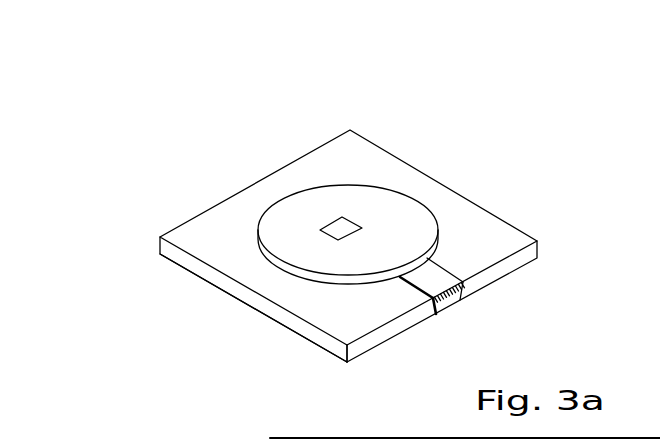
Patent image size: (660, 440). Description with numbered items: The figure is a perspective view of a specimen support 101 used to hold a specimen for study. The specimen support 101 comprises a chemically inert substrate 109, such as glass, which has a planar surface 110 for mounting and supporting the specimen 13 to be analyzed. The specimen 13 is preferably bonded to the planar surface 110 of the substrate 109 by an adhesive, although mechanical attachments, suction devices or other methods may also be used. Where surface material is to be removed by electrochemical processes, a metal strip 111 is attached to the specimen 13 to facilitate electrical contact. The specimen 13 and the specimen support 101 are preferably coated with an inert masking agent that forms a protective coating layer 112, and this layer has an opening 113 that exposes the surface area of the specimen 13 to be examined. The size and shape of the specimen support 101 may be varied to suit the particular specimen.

The specimen support 101 is at (501, 66).
The specimen 13 is at (420, 196).
The planar surface 110 is at (380, 246).
The substrate 109 is at (209, 308).
The metal strip 111 is at (499, 308).
The protective coating layer 112 is at (262, 358).
The opening 113 is at (279, 166).